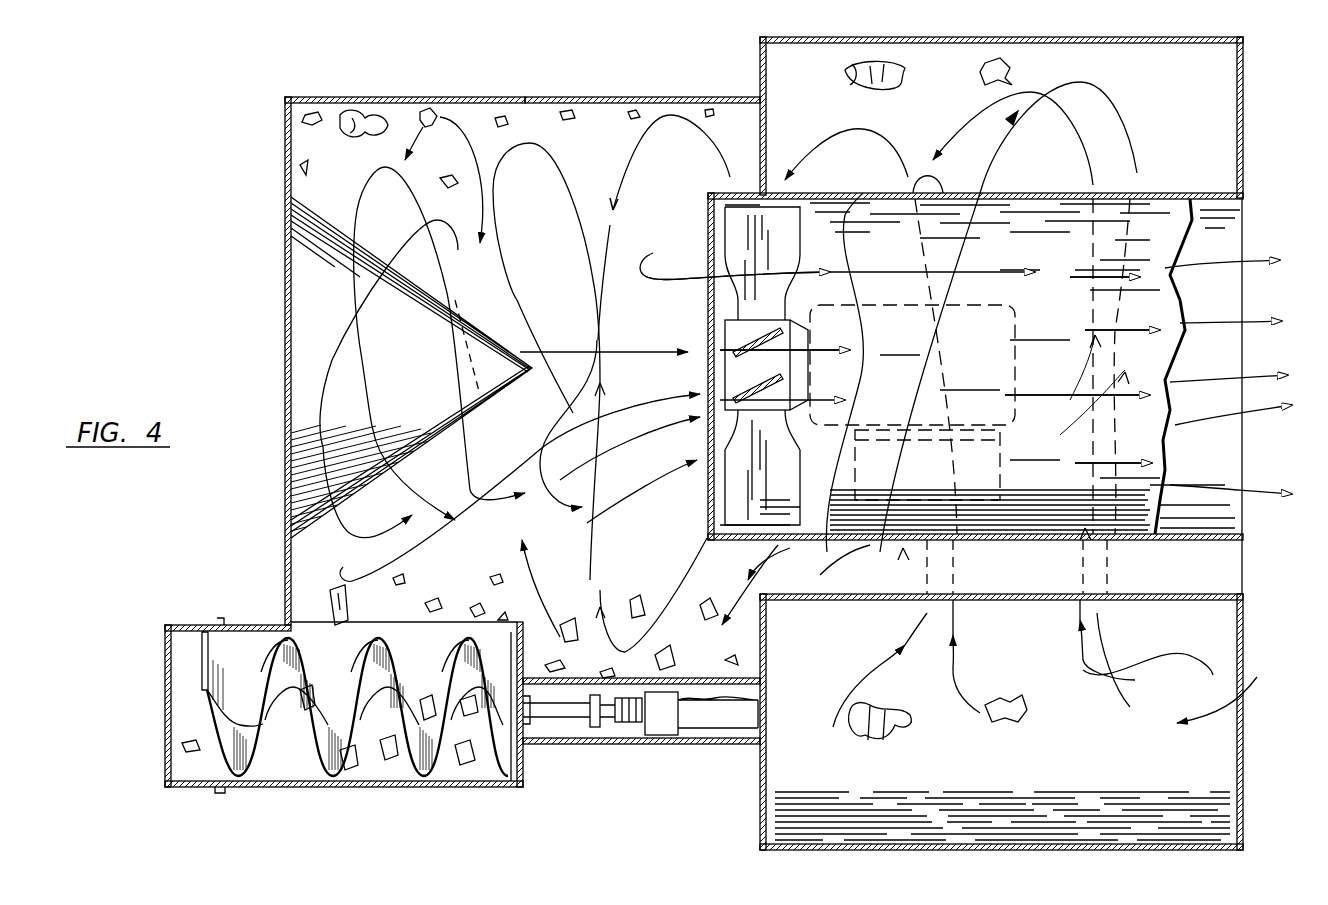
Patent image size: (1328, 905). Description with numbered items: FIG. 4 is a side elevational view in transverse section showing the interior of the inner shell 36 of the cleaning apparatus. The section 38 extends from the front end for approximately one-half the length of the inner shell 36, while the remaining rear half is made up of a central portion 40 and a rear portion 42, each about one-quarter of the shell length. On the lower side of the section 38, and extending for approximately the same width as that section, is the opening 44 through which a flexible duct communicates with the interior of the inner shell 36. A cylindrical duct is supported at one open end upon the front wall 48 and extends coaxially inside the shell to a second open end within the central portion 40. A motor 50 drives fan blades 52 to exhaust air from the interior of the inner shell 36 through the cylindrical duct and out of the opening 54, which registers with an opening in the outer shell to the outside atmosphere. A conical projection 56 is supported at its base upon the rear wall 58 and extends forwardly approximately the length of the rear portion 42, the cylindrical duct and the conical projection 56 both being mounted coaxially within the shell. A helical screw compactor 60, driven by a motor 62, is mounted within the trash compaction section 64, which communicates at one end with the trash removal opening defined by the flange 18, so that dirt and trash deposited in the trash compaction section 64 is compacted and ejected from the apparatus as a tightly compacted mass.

The flange 18 is at (240, 621).
The inner shell 36 is at (752, 47).
The section 38 is at (1088, 38).
The central portion 40 is at (688, 97).
The rear portion 42 is at (375, 97).
The opening 44 is at (1190, 718).
The front wall 48 is at (1244, 145).
The motor 50 is at (860, 365).
The fan blades 52 is at (742, 492).
The opening 54 is at (1240, 465).
The conical projection 56 is at (300, 310).
The rear wall 58 is at (285, 172).
The helical screw compactor 60 is at (328, 790).
The motor 62 is at (660, 728).
The trash compaction section 64 is at (505, 618).